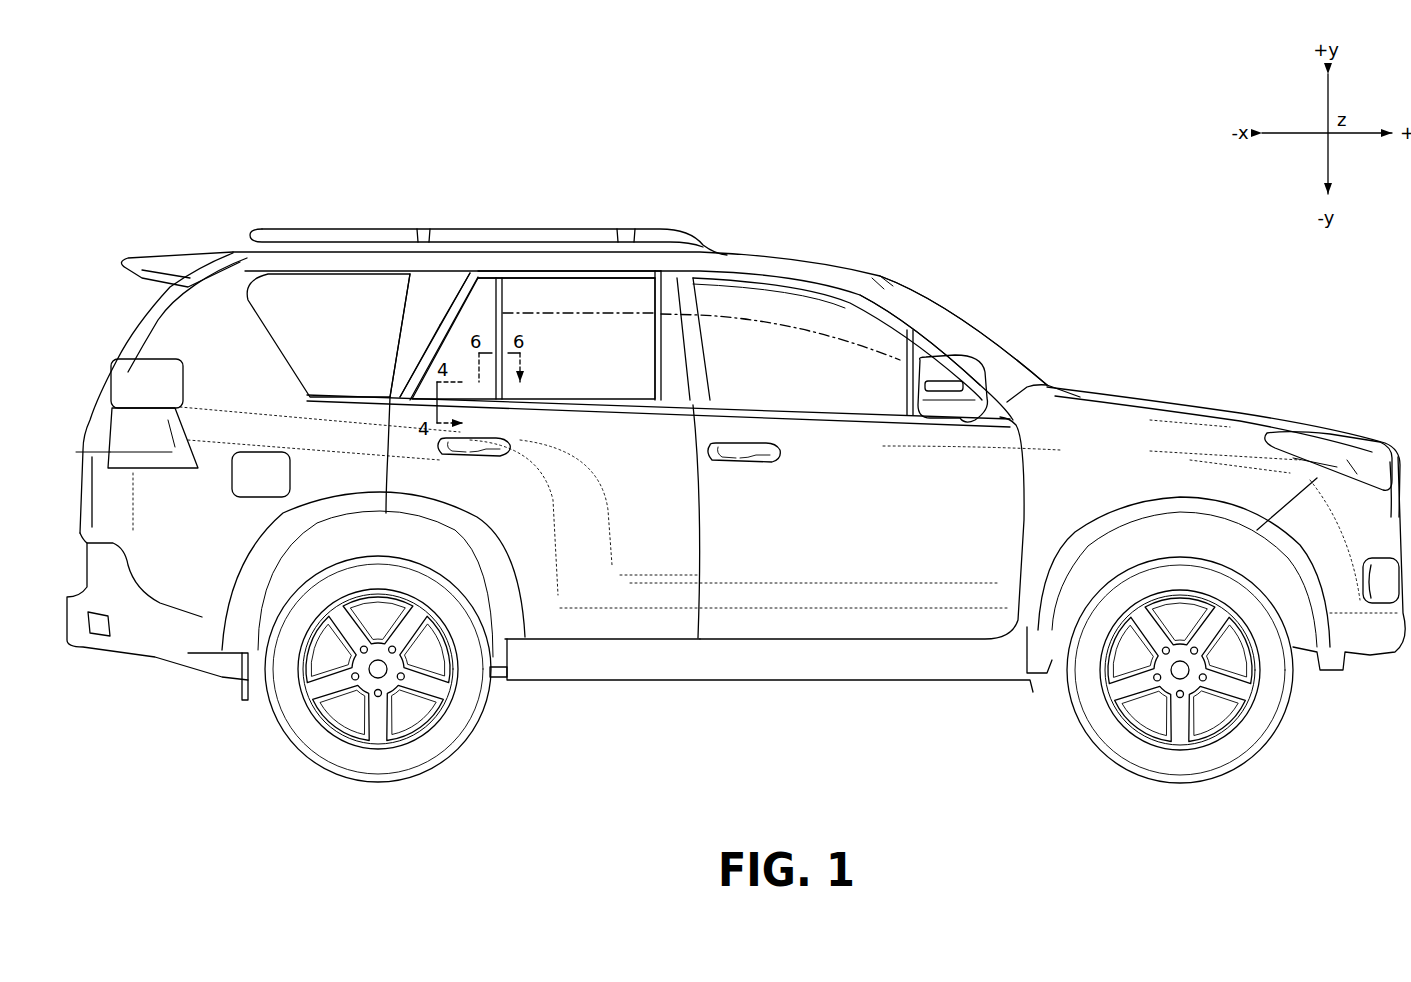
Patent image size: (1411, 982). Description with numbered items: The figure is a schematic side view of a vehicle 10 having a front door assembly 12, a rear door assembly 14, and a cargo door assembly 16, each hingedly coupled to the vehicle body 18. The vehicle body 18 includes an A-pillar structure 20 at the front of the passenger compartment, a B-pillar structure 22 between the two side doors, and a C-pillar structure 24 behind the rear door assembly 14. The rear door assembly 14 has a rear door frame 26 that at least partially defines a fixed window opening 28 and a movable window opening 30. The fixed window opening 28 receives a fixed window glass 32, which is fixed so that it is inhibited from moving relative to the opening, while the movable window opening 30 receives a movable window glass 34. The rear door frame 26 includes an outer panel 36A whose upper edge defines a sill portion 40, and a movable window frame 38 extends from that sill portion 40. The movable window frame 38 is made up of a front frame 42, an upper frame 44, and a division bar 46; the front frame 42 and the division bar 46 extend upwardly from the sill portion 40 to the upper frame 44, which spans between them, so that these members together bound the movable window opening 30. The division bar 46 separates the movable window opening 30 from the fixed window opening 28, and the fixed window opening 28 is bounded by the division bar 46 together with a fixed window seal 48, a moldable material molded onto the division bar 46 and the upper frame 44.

The vehicle 10 is at (1022, 214).
The front door assembly 12 is at (931, 642).
The rear door assembly 14 is at (607, 643).
The cargo door assembly 16 is at (123, 330).
The vehicle body 18 is at (1157, 400).
The A-pillar structure 20 is at (933, 327).
The B-pillar structure 22 is at (700, 318).
The C-pillar structure 24 is at (465, 276).
The rear door frame 26 is at (667, 566).
The fixed window opening 28 is at (457, 352).
The movable window opening 30 is at (623, 303).
The fixed window glass 32 is at (455, 319).
The movable window glass 34 is at (608, 375).
The outer panel 36A is at (686, 532).
The movable window frame 38 is at (556, 266).
The sill portion 40 is at (558, 406).
The front frame 42 is at (655, 297).
The upper frame 44 is at (590, 277).
The division bar 46 is at (503, 303).
The fixed window seal 48 is at (407, 369).